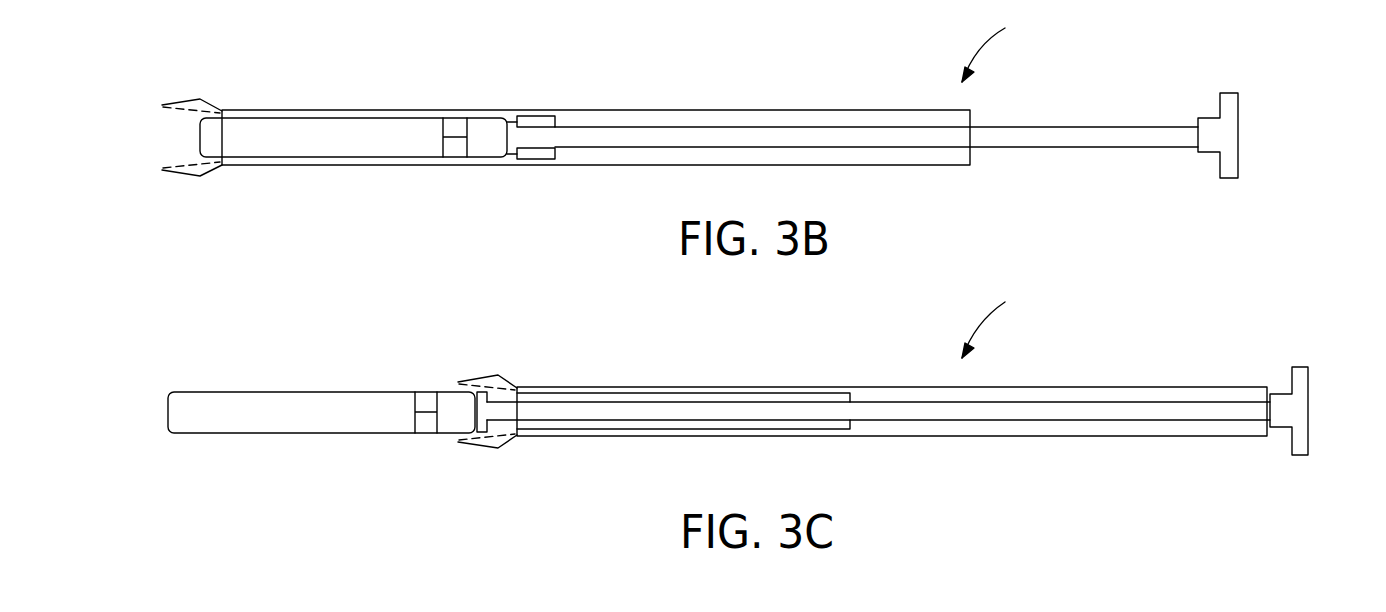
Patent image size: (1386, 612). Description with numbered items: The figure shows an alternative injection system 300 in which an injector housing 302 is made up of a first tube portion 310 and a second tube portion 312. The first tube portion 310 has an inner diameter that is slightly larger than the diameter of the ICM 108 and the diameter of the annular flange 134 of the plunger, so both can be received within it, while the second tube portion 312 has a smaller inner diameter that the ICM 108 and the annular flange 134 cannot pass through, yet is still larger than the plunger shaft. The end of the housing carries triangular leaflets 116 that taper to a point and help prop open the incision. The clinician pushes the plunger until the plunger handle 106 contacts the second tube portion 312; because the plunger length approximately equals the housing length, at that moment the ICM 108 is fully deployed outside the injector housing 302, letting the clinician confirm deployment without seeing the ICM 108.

In FIG. 3B, the injection system 300 is at (1007, 47).
In FIG. 3C, the injection system 300 is at (1007, 321).
In FIG. 3B, the injector housing 302 is at (568, 110).
In FIG. 3C, the injector housing 302 is at (753, 387).
In FIG. 3B, the first tube portion 310 is at (352, 110).
In FIG. 3C, the first tube portion 310 is at (610, 388).
In FIG. 3B, the second tube portion 312 is at (737, 113).
In FIG. 3C, the second tube portion 312 is at (1210, 393).
In FIG. 3B, the ICM 108 is at (483, 125).
In FIG. 3C, the ICM 108 is at (446, 402).
In FIG. 3B, the leaflets 116 is at (198, 103).
In FIG. 3C, the annular flange 134 is at (483, 428).
In FIG. 3B, the plunger handle 106 is at (1228, 129).
In FIG. 3C, the plunger handle 106 is at (1300, 404).